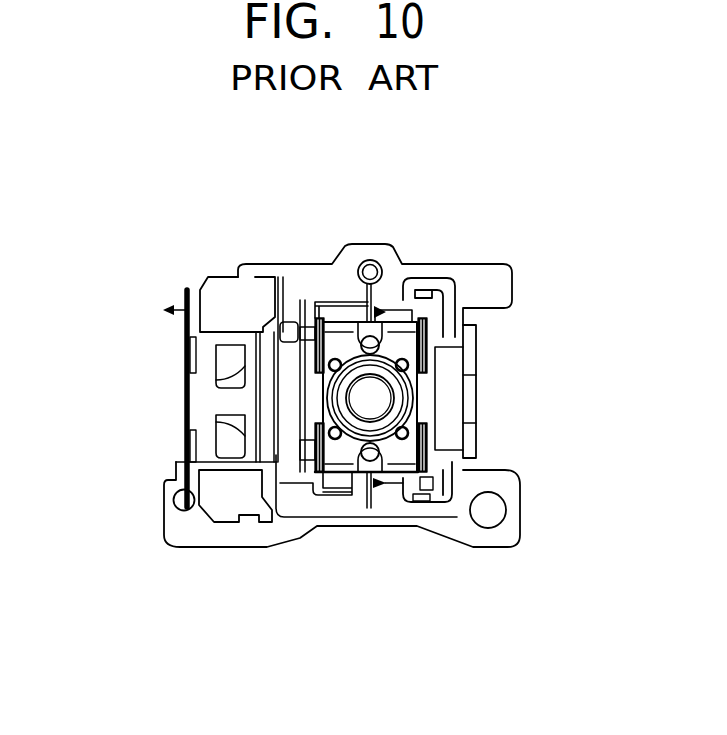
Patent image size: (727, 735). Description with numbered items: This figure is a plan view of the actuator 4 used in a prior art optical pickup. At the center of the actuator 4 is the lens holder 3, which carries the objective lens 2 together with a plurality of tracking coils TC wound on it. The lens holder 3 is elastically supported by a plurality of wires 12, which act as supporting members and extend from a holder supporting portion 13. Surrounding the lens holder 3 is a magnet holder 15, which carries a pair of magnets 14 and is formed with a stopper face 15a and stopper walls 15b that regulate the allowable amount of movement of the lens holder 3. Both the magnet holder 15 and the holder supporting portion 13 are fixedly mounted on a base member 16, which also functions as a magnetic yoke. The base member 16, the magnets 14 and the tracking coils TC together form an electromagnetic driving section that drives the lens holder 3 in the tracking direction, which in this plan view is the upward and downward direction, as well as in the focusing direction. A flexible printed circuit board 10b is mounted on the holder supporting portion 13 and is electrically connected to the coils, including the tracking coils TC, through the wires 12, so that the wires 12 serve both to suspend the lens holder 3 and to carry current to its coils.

The actuator 4 is at (139, 277).
The objective lens 2 is at (368, 394).
The lens holder 3 is at (397, 345).
The flexible printed circuit board 10b is at (186, 448).
The wires 12 is at (299, 299).
The holder supporting portion 13 is at (197, 370).
The magnets 14 is at (205, 392).
The magnet holder 15 is at (438, 285).
The stopper face 15a is at (372, 298).
The stopper walls 15b is at (410, 298).
The base member 16 is at (500, 288).
The tracking coils TC is at (312, 305).